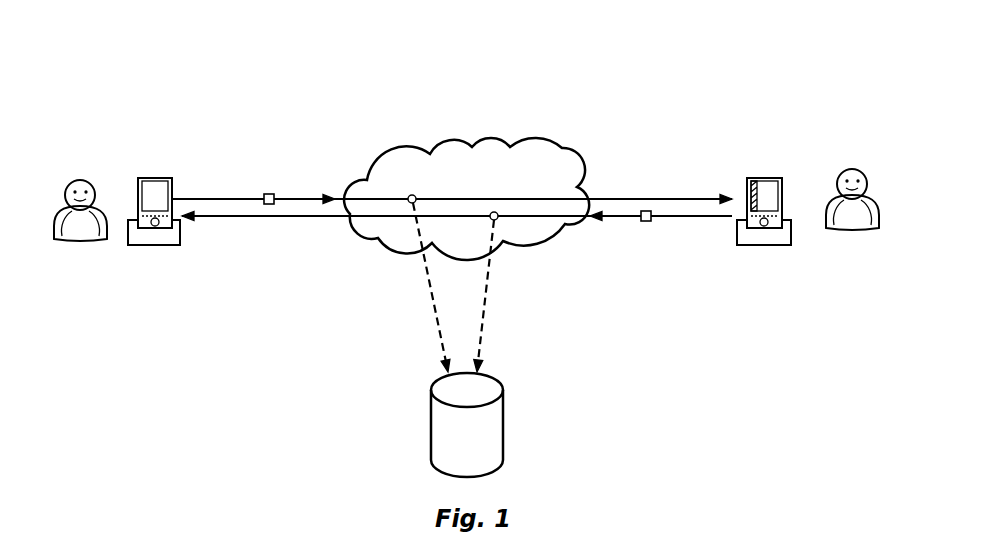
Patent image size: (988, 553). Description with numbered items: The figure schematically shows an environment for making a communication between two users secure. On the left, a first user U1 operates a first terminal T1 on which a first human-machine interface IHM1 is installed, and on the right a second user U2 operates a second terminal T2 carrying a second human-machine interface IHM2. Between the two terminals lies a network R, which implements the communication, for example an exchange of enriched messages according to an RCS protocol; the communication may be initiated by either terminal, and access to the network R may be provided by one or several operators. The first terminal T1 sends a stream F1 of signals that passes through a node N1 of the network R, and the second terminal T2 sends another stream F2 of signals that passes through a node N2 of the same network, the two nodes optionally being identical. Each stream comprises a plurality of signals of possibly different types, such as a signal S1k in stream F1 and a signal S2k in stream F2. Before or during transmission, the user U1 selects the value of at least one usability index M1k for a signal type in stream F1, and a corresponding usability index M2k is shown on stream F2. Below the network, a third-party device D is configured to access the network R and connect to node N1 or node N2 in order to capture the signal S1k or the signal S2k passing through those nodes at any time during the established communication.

The first user U1 is at (62, 162).
The second user U2 is at (871, 151).
The first terminal T1 is at (167, 154).
The second terminal T2 is at (754, 157).
The first human-machine interface IHM1 is at (160, 197).
The second human-machine interface IHM2 is at (732, 144).
The first stream of signals F1 is at (218, 195).
The second stream of signals F2 is at (675, 218).
The usability index M1k is at (269, 192).
The usability index M2k is at (646, 222).
The first network node N1 is at (412, 195).
The second network node N2 is at (494, 212).
The network R is at (466, 142).
The signal of stream F1 S1k is at (430, 290).
The signal of stream F2 S2k is at (487, 295).
The third-party device D is at (523, 425).